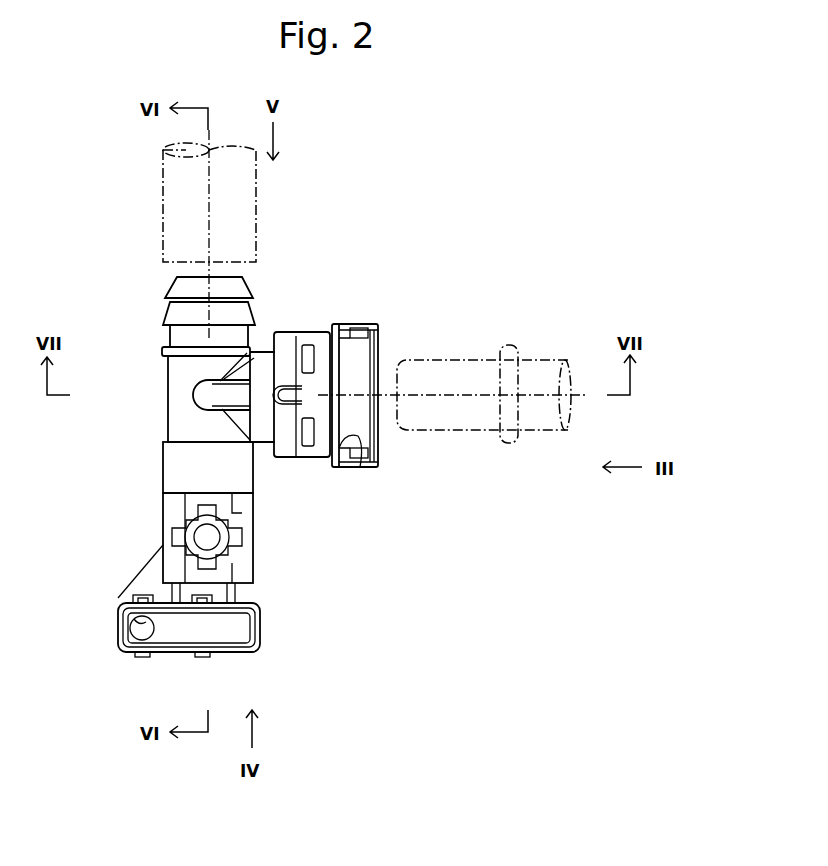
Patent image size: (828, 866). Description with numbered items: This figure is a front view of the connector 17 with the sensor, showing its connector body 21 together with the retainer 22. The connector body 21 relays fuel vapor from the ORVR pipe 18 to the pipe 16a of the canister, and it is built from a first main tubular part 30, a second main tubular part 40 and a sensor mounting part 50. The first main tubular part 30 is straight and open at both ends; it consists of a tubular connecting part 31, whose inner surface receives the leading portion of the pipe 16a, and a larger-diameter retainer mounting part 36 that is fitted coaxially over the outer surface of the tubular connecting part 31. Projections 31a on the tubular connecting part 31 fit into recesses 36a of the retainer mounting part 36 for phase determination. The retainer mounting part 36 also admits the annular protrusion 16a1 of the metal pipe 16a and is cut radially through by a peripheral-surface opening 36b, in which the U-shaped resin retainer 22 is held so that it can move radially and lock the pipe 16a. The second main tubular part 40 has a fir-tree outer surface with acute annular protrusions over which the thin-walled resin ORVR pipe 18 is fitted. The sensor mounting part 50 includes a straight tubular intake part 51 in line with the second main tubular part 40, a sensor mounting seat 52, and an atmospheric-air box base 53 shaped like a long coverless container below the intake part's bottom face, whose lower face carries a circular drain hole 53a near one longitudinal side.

The connector 17 is at (416, 211).
The ORVR pipe 18 is at (162, 213).
The second main tubular part 40 is at (167, 312).
The connector body 21 is at (157, 396).
The first main tubular part 30 is at (347, 227).
The tubular connecting part 31 is at (263, 354).
The projections 31a is at (312, 345).
The retainer mounting part 36 is at (295, 343).
The recesses 36a is at (321, 458).
The peripheral-surface opening 36b is at (360, 467).
The retainer 22 is at (361, 335).
The pipe 16a is at (454, 362).
The annular protrusion 16a1 is at (508, 352).
The sensor mounting part 50 is at (163, 520).
The tubular intake part 51 is at (177, 470).
The sensor mounting seat 52 is at (240, 538).
The atmospheric-air box base 53 is at (247, 623).
The drain hole 53a is at (130, 628).